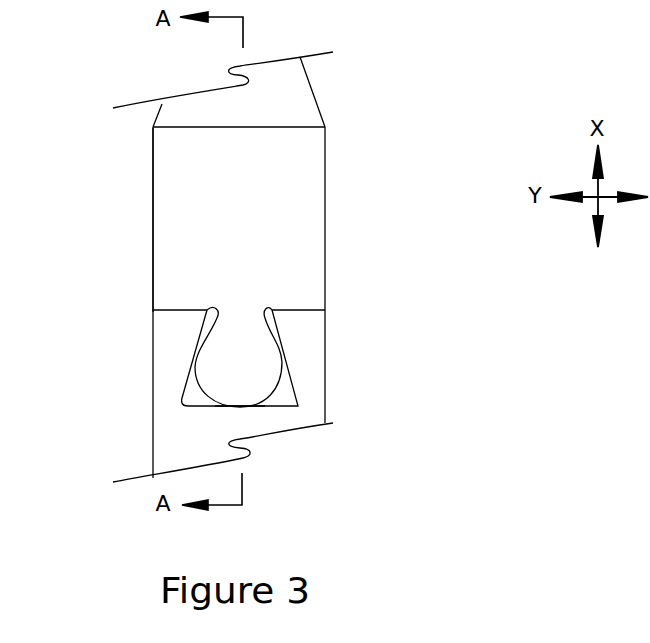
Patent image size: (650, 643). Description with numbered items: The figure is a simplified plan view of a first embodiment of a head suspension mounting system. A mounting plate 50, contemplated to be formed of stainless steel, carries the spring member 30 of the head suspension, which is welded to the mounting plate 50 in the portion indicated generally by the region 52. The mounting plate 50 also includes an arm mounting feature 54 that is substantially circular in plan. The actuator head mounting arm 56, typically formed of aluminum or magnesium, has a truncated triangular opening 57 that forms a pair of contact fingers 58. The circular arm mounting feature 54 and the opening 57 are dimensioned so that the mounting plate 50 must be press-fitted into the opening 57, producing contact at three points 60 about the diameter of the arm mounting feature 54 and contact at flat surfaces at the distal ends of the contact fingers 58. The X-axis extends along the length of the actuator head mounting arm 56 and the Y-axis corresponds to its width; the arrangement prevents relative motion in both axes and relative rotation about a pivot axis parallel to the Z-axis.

The spring member 30 is at (285, 95).
The mounting plate 50 is at (288, 217).
The portion of the mounting plate 52 is at (130, 127).
The arm mounting feature 54 is at (247, 363).
The actuator head mounting arm 56 is at (177, 456).
The truncated triangular opening 57 is at (287, 393).
The contact fingers 58 is at (163, 342).
The contact points 60 is at (220, 407).